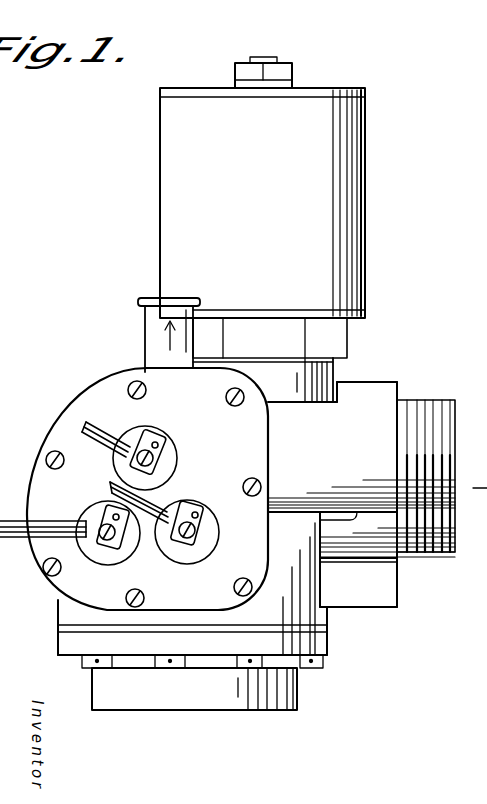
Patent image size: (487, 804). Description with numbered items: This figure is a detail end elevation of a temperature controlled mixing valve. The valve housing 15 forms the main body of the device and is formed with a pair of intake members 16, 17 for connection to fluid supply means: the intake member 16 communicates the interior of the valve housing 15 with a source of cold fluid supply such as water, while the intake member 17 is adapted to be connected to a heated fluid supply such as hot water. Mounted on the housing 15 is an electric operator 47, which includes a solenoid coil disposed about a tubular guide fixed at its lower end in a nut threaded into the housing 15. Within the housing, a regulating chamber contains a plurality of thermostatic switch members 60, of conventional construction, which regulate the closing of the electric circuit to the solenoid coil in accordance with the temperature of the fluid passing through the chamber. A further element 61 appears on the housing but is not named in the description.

The valve housing 15 is at (362, 381).
The intake member 16 is at (384, 410).
The intake member 17 is at (425, 556).
The electric operator 47 is at (367, 207).
The thermostatic switch member 60 is at (203, 503).
The inlet pipe 61 is at (145, 353).